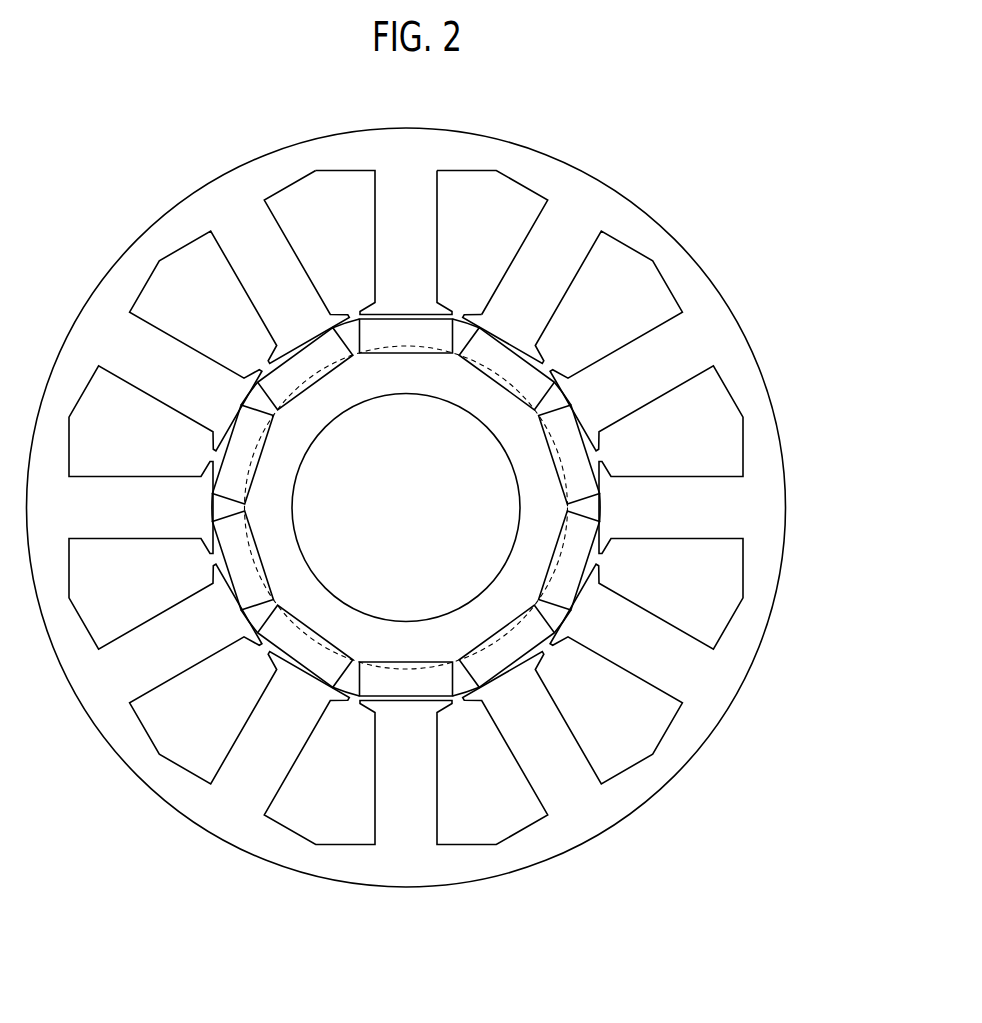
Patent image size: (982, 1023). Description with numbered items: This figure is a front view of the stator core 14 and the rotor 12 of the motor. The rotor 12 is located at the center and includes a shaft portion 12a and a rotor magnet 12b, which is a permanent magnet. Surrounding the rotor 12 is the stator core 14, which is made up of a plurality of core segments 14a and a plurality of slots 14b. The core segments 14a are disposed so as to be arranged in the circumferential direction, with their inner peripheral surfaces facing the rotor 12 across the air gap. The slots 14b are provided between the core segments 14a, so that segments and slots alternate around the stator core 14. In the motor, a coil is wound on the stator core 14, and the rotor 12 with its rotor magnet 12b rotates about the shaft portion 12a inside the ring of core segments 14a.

The rotor 12 is at (597, 509).
The shaft portion 12a is at (532, 462).
The rotor magnet 12b is at (583, 480).
The stator core 14 is at (632, 203).
The core segment 14a is at (407, 257).
The slot 14b is at (510, 210).